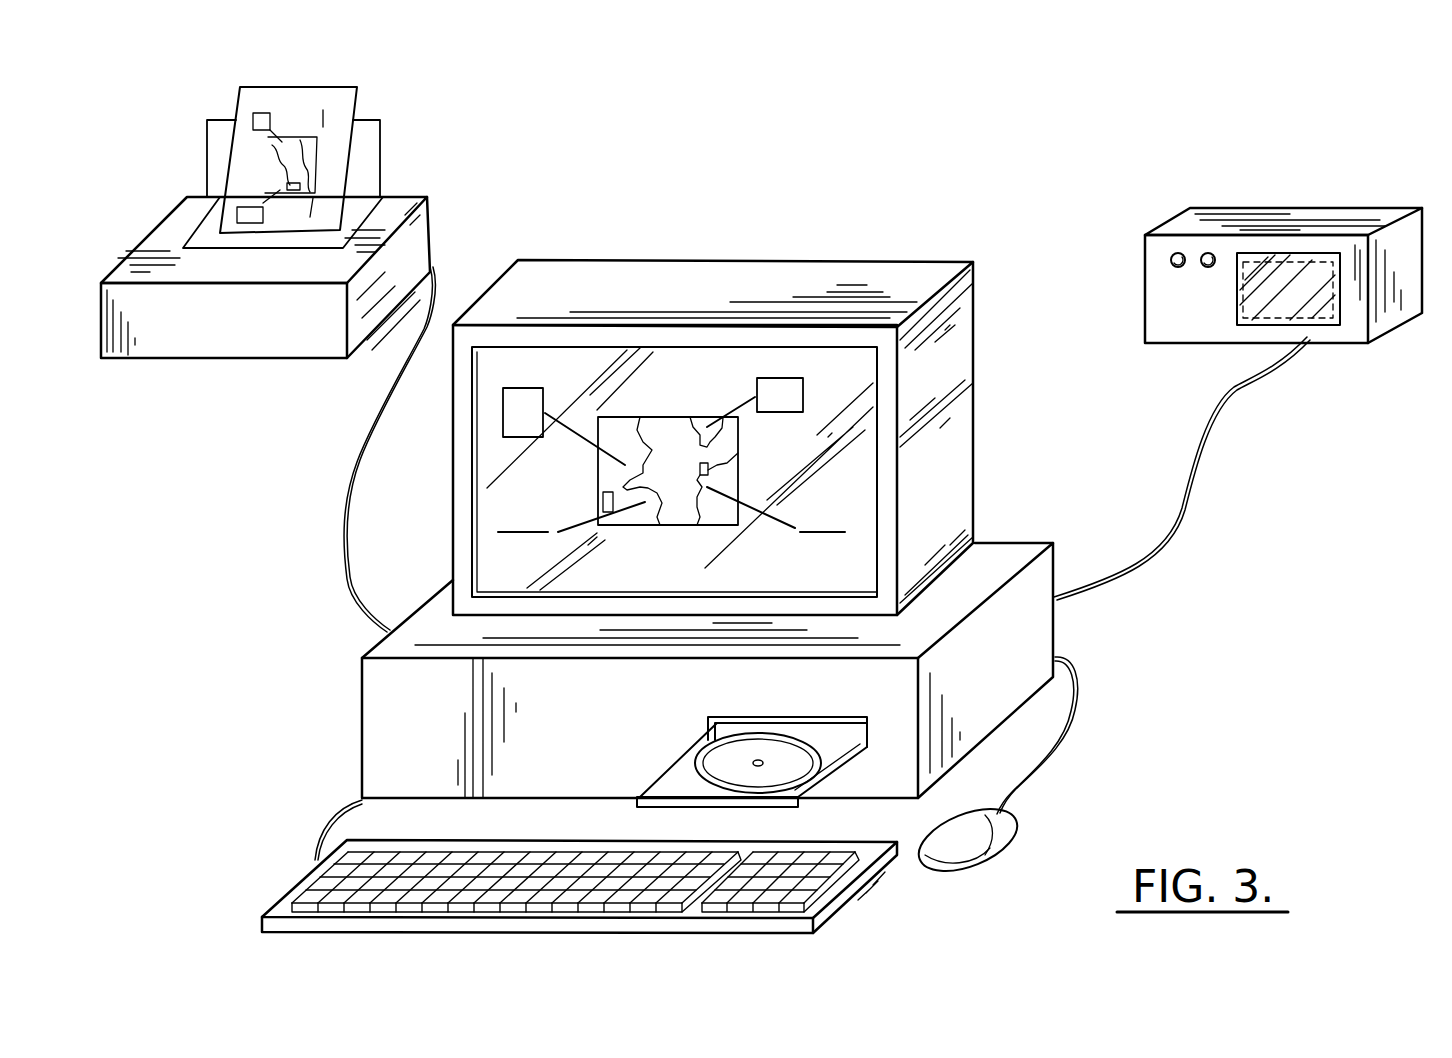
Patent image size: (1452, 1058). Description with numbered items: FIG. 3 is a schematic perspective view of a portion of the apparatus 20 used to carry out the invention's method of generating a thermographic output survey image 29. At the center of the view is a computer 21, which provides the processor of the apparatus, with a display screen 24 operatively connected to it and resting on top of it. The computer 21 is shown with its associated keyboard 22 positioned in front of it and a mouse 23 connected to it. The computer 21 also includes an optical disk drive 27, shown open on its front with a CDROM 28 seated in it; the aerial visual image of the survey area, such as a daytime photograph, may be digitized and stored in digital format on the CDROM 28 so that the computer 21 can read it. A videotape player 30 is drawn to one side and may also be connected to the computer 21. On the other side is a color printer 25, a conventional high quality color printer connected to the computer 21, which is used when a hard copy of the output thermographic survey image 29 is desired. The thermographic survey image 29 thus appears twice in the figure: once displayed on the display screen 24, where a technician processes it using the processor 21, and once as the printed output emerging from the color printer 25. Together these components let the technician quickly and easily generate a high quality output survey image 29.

The apparatus 20 is at (830, 180).
The computer 21 is at (1043, 575).
The keyboard 22 is at (840, 892).
The mouse 23 is at (992, 843).
The display screen 24 is at (957, 418).
The color printer 25 is at (430, 223).
The optical disk drive 27 is at (835, 752).
The CDROM 28 is at (717, 767).
The thermographic output survey image 29 is at (338, 123).
The videotape player 30 is at (1403, 303).